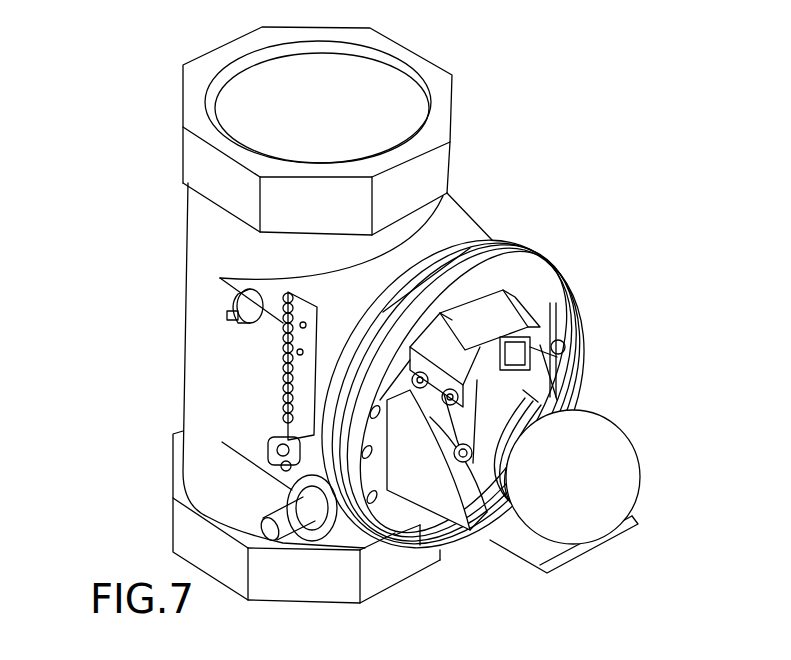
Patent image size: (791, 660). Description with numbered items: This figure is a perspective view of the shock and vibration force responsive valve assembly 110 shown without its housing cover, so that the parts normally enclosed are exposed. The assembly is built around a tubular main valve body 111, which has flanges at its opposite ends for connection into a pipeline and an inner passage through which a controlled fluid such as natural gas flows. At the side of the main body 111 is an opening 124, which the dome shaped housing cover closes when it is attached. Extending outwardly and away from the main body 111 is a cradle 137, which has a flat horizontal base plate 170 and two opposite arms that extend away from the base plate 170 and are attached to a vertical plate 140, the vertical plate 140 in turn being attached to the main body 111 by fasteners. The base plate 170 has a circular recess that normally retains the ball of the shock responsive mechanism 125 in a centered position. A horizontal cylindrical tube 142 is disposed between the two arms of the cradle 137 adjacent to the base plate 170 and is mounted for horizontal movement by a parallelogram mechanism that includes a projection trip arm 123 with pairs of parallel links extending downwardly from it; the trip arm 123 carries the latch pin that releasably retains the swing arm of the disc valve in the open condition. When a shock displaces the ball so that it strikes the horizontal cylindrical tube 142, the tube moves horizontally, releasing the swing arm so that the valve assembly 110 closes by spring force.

The shock and vibration force responsive valve assembly 110 is at (556, 141).
The tubular main valve body 111 is at (187, 295).
The projection trip arm 123 is at (497, 320).
The opening 124 is at (398, 550).
The shock responsive mechanism 125 is at (604, 304).
The cradle 137 is at (608, 433).
The vertical plate 140 is at (413, 540).
The horizontal cylindrical tube 142 is at (523, 402).
The base plate 170 is at (550, 553).